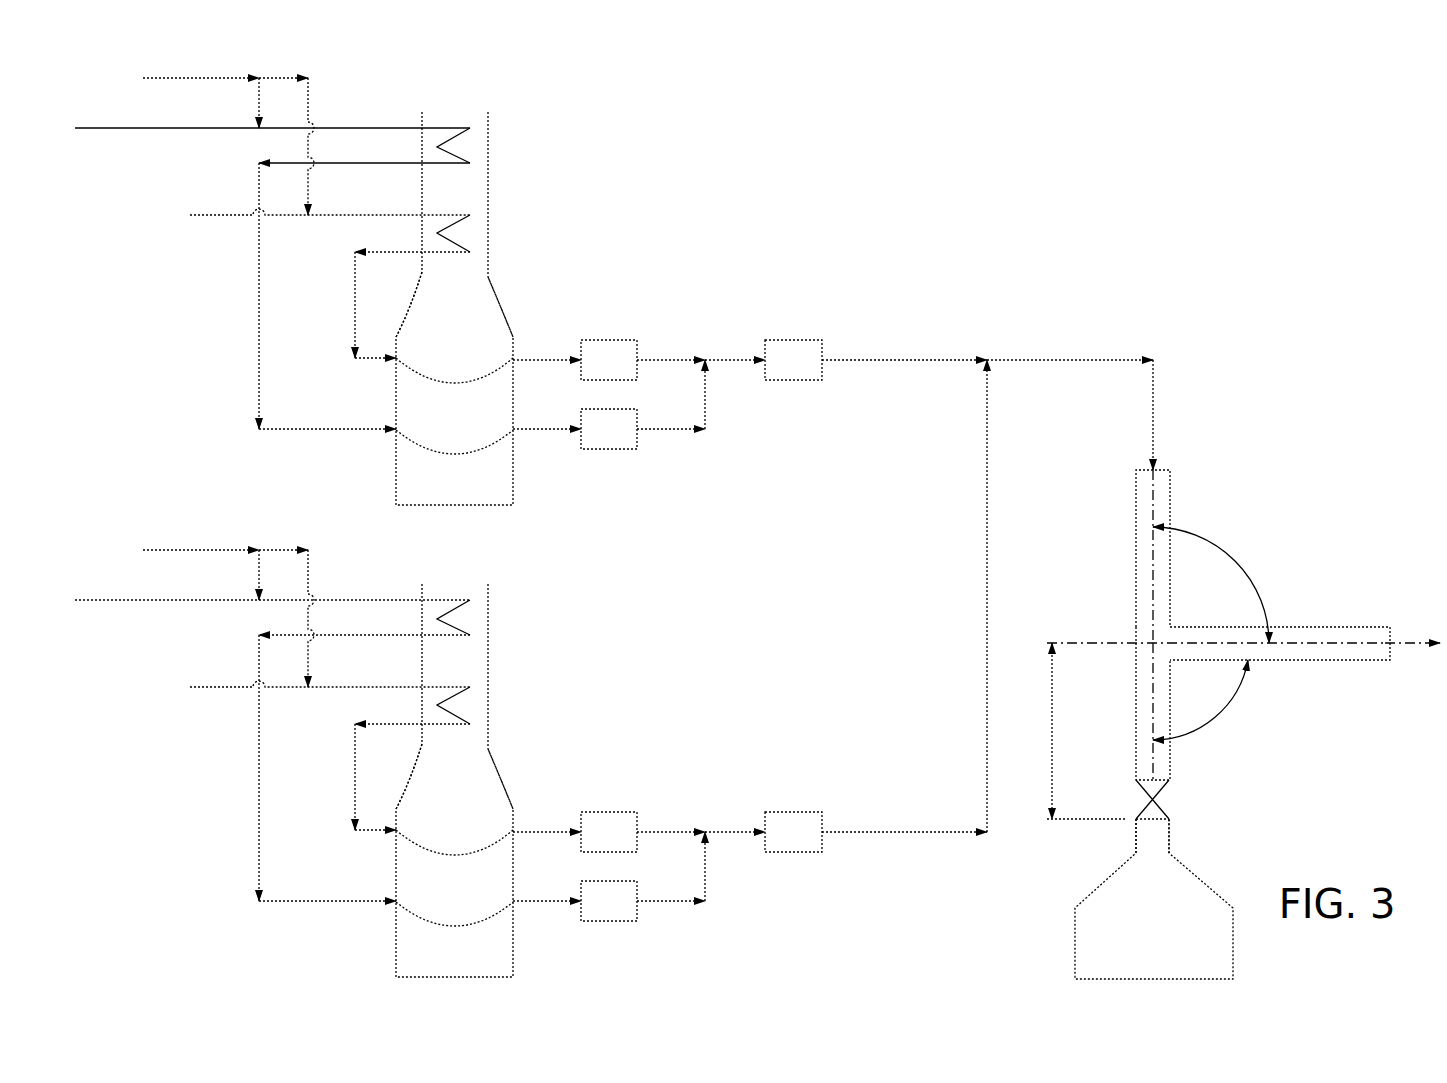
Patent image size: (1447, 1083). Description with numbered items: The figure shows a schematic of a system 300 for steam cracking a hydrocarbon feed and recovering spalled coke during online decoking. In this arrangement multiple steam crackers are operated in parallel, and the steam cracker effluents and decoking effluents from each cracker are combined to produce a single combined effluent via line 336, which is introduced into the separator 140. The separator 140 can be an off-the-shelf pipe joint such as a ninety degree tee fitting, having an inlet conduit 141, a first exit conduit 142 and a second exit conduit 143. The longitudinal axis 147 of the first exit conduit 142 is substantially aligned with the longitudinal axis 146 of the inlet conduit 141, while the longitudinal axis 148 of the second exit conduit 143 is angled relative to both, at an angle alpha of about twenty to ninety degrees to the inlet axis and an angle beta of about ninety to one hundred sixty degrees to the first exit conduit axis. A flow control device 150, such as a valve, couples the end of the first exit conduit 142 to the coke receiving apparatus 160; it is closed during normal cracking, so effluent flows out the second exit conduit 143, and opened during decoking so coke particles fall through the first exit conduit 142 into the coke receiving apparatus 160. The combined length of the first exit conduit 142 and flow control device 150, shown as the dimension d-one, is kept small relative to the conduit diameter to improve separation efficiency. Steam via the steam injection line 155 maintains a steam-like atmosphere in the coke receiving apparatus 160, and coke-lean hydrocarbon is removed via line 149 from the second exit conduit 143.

The separator 140 is at (1237, 644).
The inlet conduit 141 is at (1170, 487).
The first exit conduit 142 is at (1170, 767).
The second exit conduit 143 is at (1365, 626).
The longitudinal axis of inlet conduit 146 is at (1153, 562).
The longitudinal axis of first exit conduit 147 is at (1153, 692).
The longitudinal axis of second exit conduit 148 is at (1313, 626).
The coke-lean hydrocarbon line 149 is at (1407, 652).
The flow control device 150 is at (1145, 790).
The steam injection line 155 is at (1177, 836).
The coke receiving apparatus 160 is at (1154, 899).
The system 300 is at (998, 234).
The combined effluent line 336 is at (1067, 354).